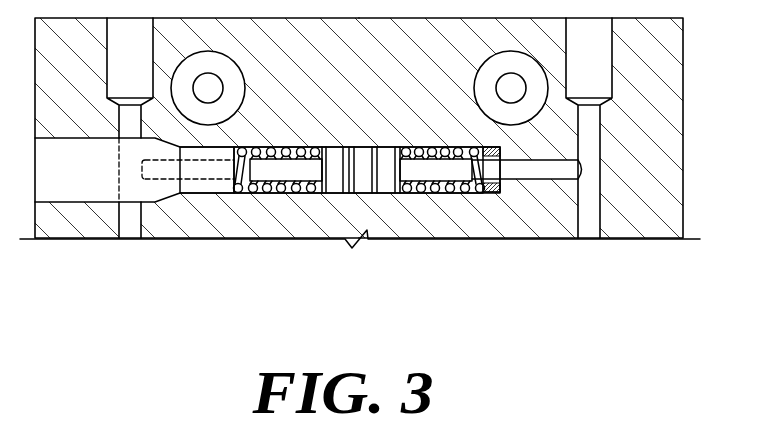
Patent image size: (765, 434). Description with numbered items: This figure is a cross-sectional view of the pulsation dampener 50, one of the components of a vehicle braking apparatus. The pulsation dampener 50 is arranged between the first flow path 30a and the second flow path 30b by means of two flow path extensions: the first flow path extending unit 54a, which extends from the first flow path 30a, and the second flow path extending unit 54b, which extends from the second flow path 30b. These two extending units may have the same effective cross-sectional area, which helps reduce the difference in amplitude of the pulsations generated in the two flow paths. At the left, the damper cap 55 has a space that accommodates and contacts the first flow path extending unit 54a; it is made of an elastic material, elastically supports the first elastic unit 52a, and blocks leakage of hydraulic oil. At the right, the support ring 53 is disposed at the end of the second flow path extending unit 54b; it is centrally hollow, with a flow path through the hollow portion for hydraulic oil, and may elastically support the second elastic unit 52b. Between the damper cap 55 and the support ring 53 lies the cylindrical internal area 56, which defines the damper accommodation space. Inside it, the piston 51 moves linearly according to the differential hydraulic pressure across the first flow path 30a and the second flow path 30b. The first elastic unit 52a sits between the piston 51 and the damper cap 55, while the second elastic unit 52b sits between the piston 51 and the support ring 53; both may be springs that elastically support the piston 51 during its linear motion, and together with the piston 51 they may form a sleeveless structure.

The first flow path 30a is at (130, 239).
The second flow path 30b is at (588, 239).
The pulsation dampener 50 is at (308, 230).
The piston 51 is at (343, 188).
The first elastic unit 52a is at (302, 193).
The second elastic unit 52b is at (400, 193).
The support ring 53 is at (485, 214).
The first flow path extending unit 54a is at (212, 172).
The second flow path extending unit 54b is at (540, 170).
The damper cap 55 is at (173, 196).
The cylindrical internal area 56 is at (263, 193).